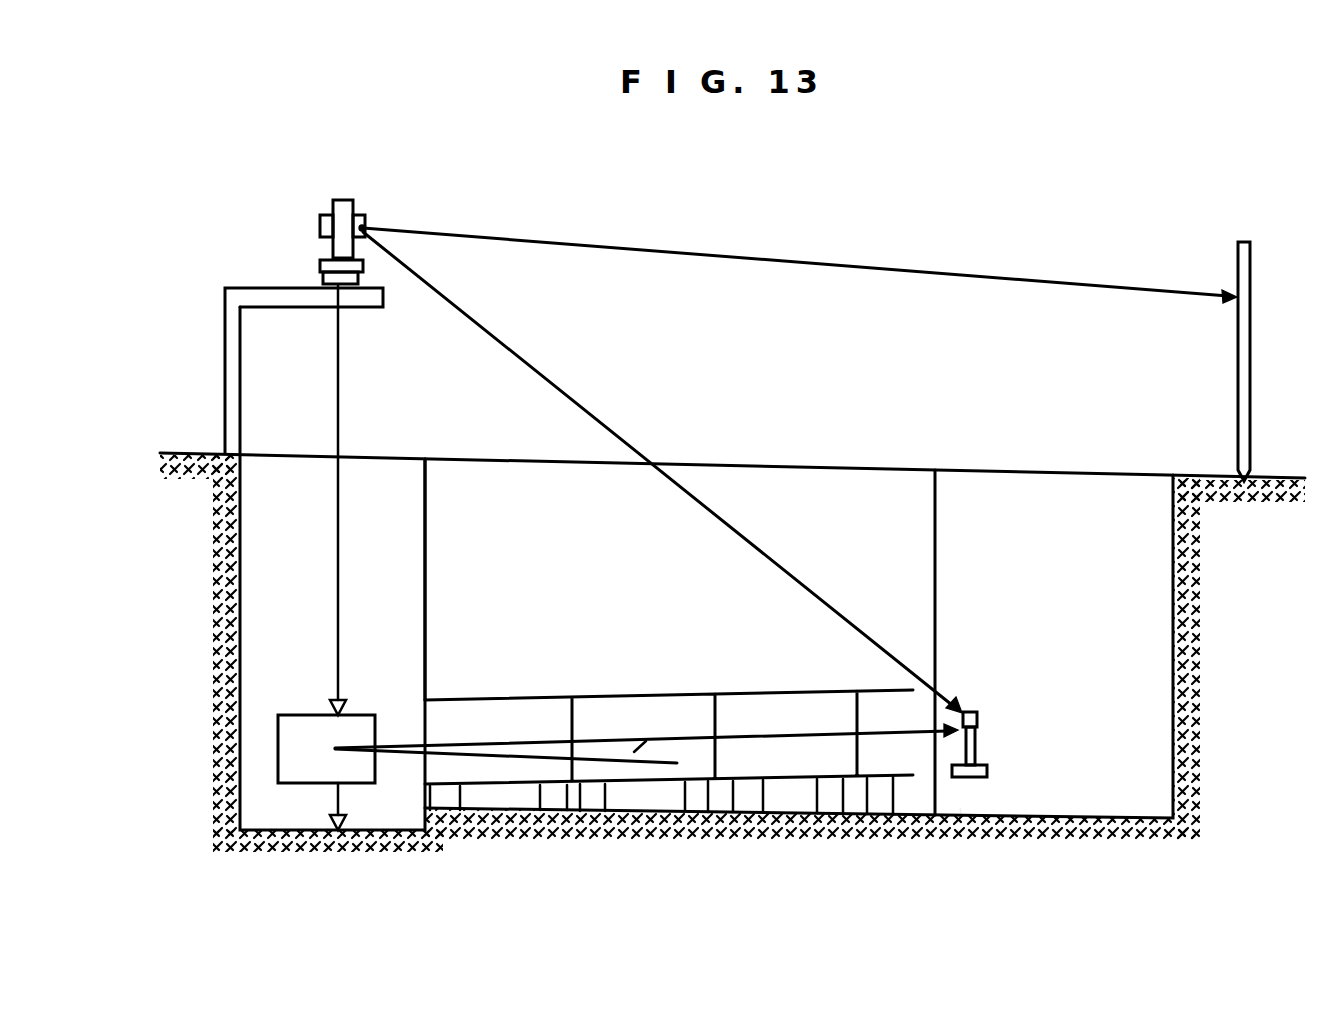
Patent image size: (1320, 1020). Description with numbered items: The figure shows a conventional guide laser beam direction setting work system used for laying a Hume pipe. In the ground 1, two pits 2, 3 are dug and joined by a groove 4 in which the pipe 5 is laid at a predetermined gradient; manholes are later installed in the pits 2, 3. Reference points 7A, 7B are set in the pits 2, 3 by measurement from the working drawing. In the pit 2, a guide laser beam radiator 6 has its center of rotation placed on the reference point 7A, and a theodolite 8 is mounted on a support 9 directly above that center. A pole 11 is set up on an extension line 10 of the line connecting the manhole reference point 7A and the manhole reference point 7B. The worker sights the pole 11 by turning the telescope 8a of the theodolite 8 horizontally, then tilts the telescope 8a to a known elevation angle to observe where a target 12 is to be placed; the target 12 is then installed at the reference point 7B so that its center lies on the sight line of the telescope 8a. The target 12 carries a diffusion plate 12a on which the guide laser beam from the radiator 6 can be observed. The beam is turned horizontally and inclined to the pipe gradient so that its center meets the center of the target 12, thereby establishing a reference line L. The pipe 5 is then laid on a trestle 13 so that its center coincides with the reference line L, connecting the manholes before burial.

The ground 1 is at (179, 633).
The pit 2 is at (378, 478).
The pit 3 is at (1058, 503).
The groove 4 is at (818, 493).
The pipe 5 is at (530, 700).
The guide laser beam radiator 6 is at (302, 735).
The reference point 7A is at (330, 835).
The reference point 7B is at (968, 822).
The theodolite 8 is at (340, 200).
The telescope 8a is at (362, 220).
The support 9 is at (222, 398).
The extension line 10 is at (937, 270).
The pole 11 is at (1252, 320).
The target 12 is at (972, 712).
The diffusion plate 12a is at (977, 731).
The trestle 13 is at (445, 814).
The reference line L is at (688, 735).